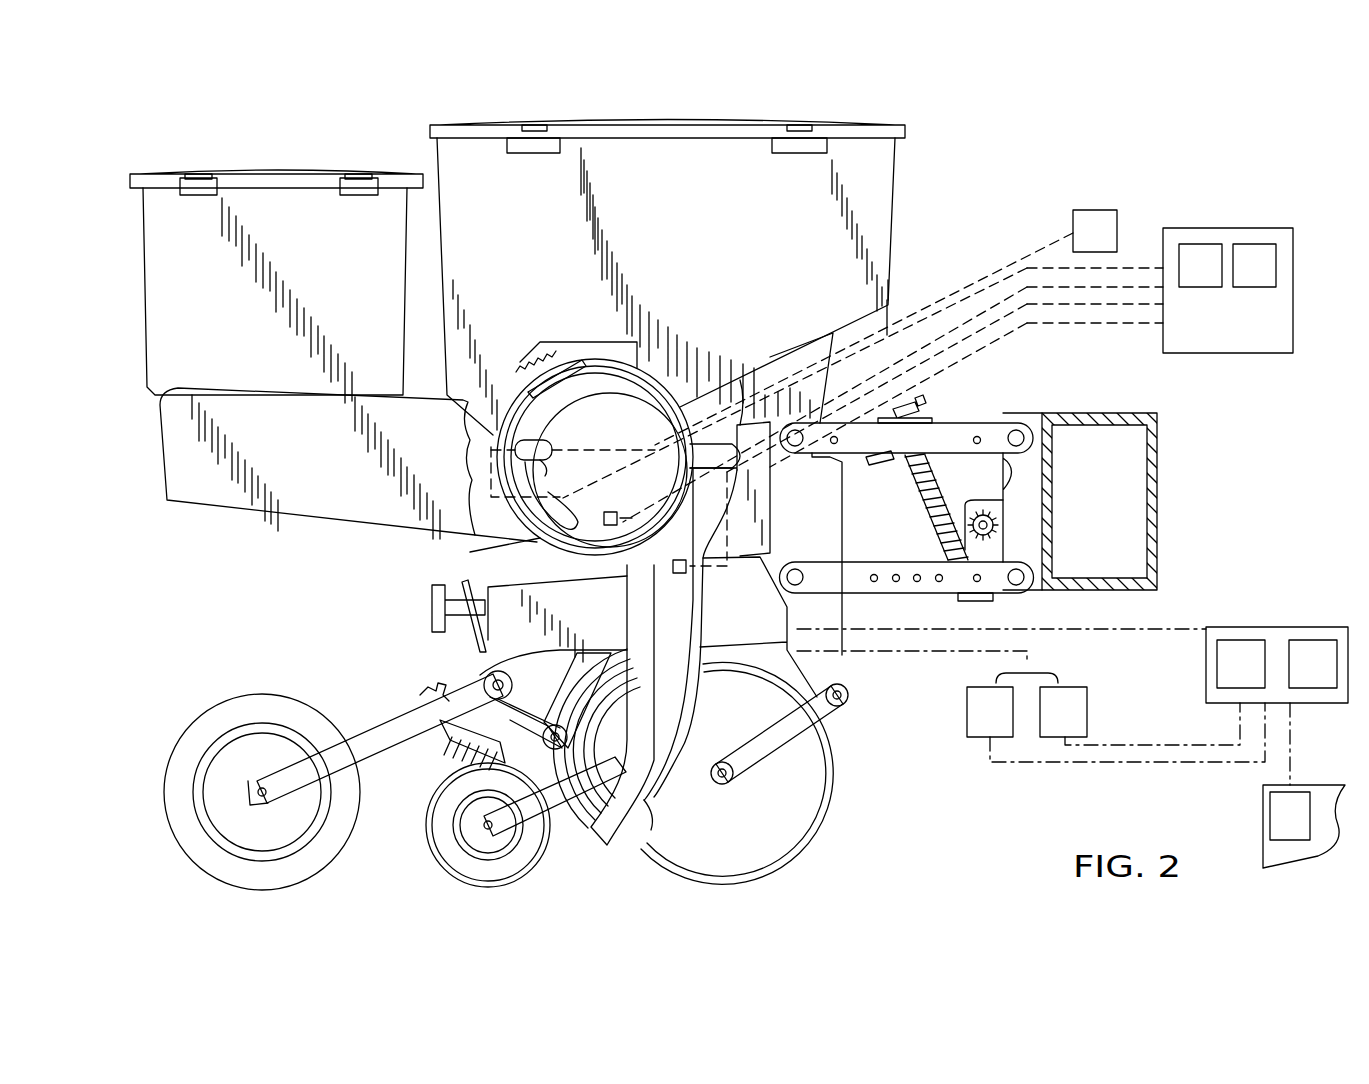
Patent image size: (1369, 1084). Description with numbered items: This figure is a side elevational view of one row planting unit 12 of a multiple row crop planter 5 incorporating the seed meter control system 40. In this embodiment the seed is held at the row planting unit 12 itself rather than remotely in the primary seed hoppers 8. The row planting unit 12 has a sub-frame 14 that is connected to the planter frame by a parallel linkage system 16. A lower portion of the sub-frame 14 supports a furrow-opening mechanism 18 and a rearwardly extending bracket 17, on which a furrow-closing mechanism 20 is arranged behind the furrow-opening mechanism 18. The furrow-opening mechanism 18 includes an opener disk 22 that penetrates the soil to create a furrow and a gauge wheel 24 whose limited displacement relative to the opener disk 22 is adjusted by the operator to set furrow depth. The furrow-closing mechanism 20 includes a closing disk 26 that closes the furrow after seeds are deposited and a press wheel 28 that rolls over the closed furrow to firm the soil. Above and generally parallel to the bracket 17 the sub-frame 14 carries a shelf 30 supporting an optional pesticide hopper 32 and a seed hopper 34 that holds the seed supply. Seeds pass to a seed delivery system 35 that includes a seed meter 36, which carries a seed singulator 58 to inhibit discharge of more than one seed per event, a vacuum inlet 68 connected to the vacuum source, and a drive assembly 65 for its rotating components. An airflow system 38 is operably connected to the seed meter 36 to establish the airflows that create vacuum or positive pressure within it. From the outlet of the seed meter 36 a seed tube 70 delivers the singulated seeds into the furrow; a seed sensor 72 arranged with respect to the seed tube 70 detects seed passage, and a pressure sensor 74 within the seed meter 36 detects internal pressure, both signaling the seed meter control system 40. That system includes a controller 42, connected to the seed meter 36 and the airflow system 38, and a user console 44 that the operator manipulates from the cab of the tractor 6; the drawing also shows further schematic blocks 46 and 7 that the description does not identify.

The planter 5 is at (1000, 215).
The tractor 6 is at (1323, 790).
The display 7 is at (1282, 832).
The primary seed hoppers 8 is at (1113, 412).
The row planting unit 12 is at (902, 269).
The sub-frame 14 is at (850, 505).
The parallel linkage system 16 is at (976, 420).
The rearwardly extending bracket 17 is at (497, 590).
The furrow-opening mechanism 18 is at (878, 788).
The furrow-closing mechanism 20 is at (381, 680).
The opener disk 22 is at (783, 862).
The gauge wheel 24 is at (793, 815).
The closing disk 26 is at (528, 860).
The press wheel 28 is at (200, 730).
The shelf 30 is at (193, 495).
The pesticide hopper 32 is at (338, 281).
The seed hopper 34 is at (738, 214).
The seed delivery system 35 is at (590, 344).
The seed meter 36 is at (641, 386).
The airflow system 38 is at (1081, 247).
The seed meter control system 40 is at (1293, 296).
The controller 42 is at (1186, 281).
The user console 44 is at (1241, 281).
The communication module 46 is at (1299, 680).
The seed singulator 58 is at (535, 350).
The drive assembly 65 is at (698, 455).
The vacuum inlet 68 is at (573, 484).
The seed tube 70 is at (656, 812).
The seed sensor 72 is at (685, 575).
The pressure sensor 74 is at (600, 525).